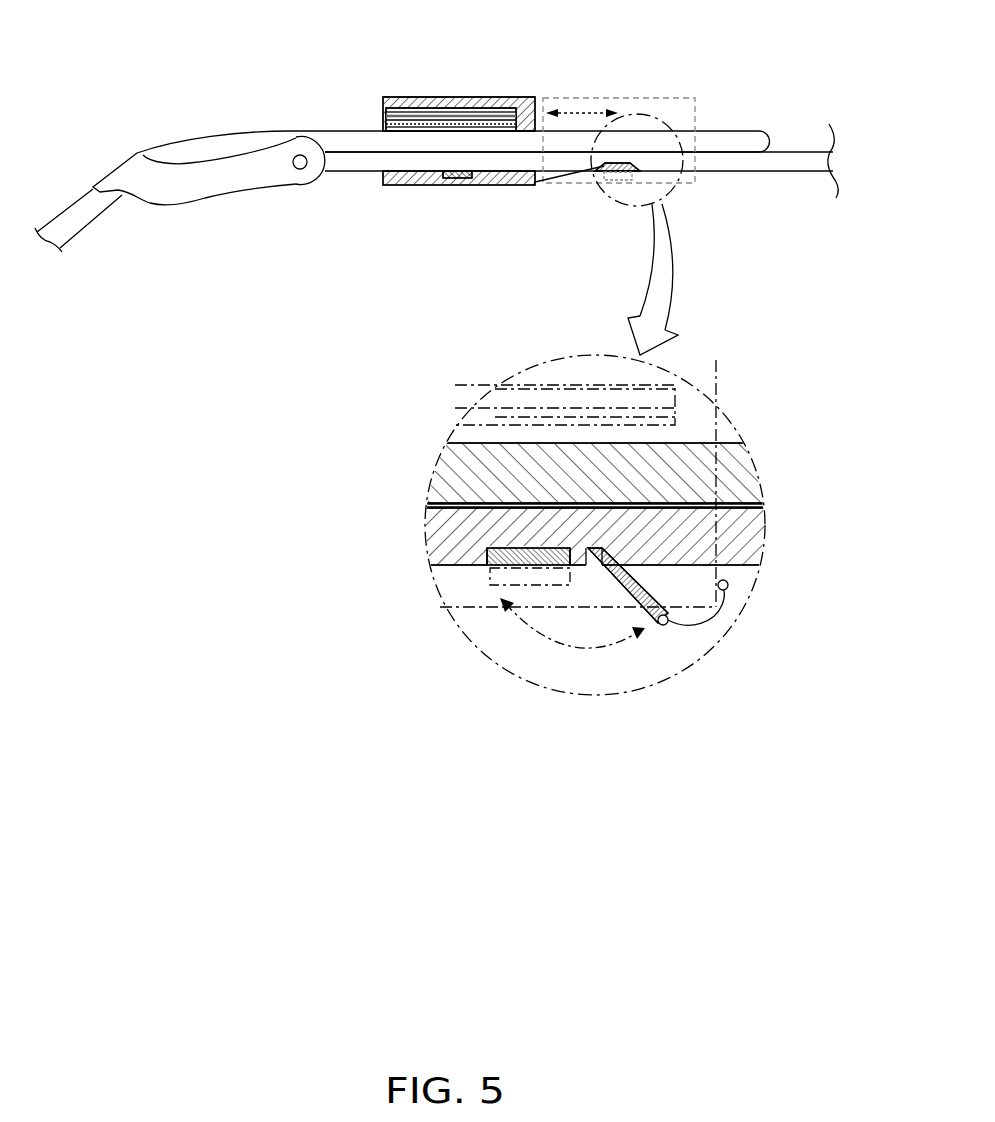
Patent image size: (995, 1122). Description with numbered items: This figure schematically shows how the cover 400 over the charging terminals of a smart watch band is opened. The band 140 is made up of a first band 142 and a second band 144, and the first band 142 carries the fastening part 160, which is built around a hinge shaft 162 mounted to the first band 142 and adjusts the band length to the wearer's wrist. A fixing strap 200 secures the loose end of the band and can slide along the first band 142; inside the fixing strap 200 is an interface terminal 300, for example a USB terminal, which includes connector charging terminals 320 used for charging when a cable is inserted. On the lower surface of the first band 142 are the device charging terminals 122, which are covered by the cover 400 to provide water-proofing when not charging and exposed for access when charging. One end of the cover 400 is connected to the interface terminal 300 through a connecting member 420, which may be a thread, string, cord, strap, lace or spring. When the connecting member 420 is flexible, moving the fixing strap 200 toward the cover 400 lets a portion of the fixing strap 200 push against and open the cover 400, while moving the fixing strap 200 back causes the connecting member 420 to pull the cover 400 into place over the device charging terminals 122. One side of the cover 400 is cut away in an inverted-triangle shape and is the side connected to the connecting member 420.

The device charging terminals 122 is at (620, 152).
The band 140 is at (372, 55).
The first band 142 is at (343, 163).
The second band 144 is at (372, 143).
The fastening part 160 is at (168, 215).
The hinge shaft 162 is at (300, 170).
The fixing strap 200 is at (468, 85).
The interface terminal 300 is at (421, 113).
The connector charging terminals 320 is at (456, 183).
The cover 400 is at (624, 170).
The connecting member 420 is at (560, 181).